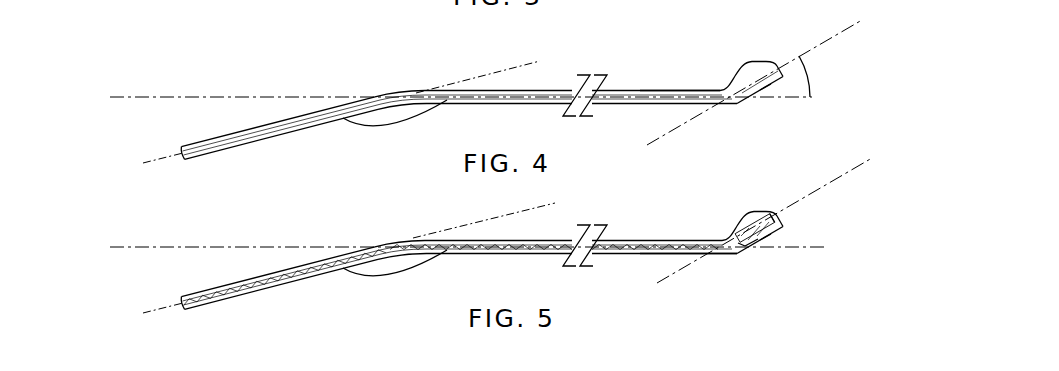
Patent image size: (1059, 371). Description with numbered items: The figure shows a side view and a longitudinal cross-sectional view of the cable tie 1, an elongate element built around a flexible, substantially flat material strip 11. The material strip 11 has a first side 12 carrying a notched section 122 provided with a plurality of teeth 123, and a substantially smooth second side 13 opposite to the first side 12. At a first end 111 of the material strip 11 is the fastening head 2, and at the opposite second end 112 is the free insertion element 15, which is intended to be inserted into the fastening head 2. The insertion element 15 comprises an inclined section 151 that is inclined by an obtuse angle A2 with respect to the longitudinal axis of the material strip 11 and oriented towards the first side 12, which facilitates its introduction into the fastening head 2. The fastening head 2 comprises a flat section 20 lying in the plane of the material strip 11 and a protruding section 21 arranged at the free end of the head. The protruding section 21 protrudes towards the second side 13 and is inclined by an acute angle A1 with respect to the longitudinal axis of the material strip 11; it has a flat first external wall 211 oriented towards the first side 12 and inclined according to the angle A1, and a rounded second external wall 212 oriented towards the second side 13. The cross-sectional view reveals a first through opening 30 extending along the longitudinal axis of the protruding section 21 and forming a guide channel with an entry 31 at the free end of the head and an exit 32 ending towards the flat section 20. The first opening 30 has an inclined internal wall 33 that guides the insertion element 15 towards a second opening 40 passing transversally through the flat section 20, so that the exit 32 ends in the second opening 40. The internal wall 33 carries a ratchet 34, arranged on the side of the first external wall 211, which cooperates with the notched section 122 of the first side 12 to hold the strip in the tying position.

In FIG. 4, the cable tie 1 is at (343, 65).
In FIG. 5, the cable tie 1 is at (350, 229).
In FIG. 4, the fastening head 2 is at (746, 108).
In FIG. 5, the fastening head 2 is at (715, 210).
In FIG. 4, the material strip 11 is at (518, 106).
In FIG. 4, the first side 12 is at (610, 107).
In FIG. 5, the first side 12 is at (450, 258).
In FIG. 4, the second side 13 is at (547, 89).
In FIG. 4, the insertion element 15 is at (250, 122).
In FIG. 5, the insertion element 15 is at (255, 269).
In FIG. 4, the flat section 20 is at (671, 87).
In FIG. 5, the flat section 20 is at (703, 259).
In FIG. 4, the protruding section 21 is at (740, 61).
In FIG. 5, the protruding section 21 is at (749, 204).
In FIG. 5, the first through opening 30 is at (768, 243).
In FIG. 5, the entry 31 is at (774, 230).
In FIG. 5, the exit 32 is at (730, 238).
In FIG. 5, the internal wall 33 is at (734, 254).
In FIG. 5, the ratchet 34 is at (752, 262).
In FIG. 5, the second opening 40 is at (690, 239).
In FIG. 4, the first end 111 is at (716, 86).
In FIG. 4, the second end 112 is at (403, 84).
In FIG. 5, the second end 112 is at (401, 235).
In FIG. 5, the notched section 122 is at (520, 255).
In FIG. 5, the teeth 123 is at (497, 254).
In FIG. 4, the inclined section 151 is at (304, 124).
In FIG. 5, the inclined section 151 is at (278, 280).
In FIG. 4, the first external wall 211 is at (762, 92).
In FIG. 5, the first external wall 211 is at (780, 236).
In FIG. 4, the second external wall 212 is at (757, 58).
In FIG. 5, the second external wall 212 is at (757, 208).
In FIG. 4, the acute angle A1 is at (820, 76).
In FIG. 4, the obtuse angle A2 is at (395, 126).
In FIG. 5, the obtuse angle A2 is at (395, 276).